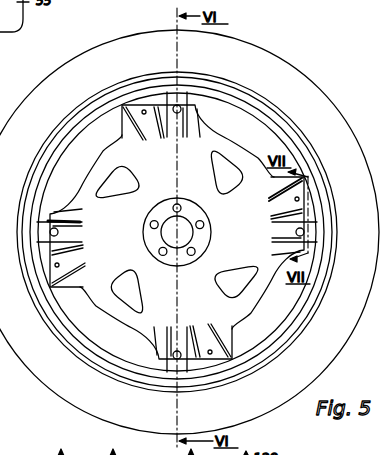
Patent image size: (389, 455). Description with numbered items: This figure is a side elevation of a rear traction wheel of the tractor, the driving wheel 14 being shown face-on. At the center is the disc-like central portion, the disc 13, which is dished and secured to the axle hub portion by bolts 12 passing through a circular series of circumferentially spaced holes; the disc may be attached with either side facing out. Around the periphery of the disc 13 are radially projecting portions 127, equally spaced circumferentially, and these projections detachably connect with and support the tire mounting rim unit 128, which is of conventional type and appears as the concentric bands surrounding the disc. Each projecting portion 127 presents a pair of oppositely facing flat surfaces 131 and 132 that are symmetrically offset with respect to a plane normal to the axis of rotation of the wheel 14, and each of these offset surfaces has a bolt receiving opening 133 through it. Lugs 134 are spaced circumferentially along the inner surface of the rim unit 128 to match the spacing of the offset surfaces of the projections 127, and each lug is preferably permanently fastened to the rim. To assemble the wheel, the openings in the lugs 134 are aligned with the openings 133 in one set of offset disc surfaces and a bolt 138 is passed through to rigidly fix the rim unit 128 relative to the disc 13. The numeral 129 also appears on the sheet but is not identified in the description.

The bolt 12 is at (204, 226).
The central disc portion 13 is at (100, 160).
The driving wheel 14 is at (177, 232).
The radially projecting portion 127 is at (190, 106).
The tire mounting rim unit 128 is at (254, 360).
The rim flange 129 is at (40, 451).
The flat surface 131 is at (288, 241).
The flat surface 132 is at (289, 193).
The bolt receiving opening 133 is at (293, 202).
The lug 134 is at (161, 366).
The bolt 138 is at (52, 224).